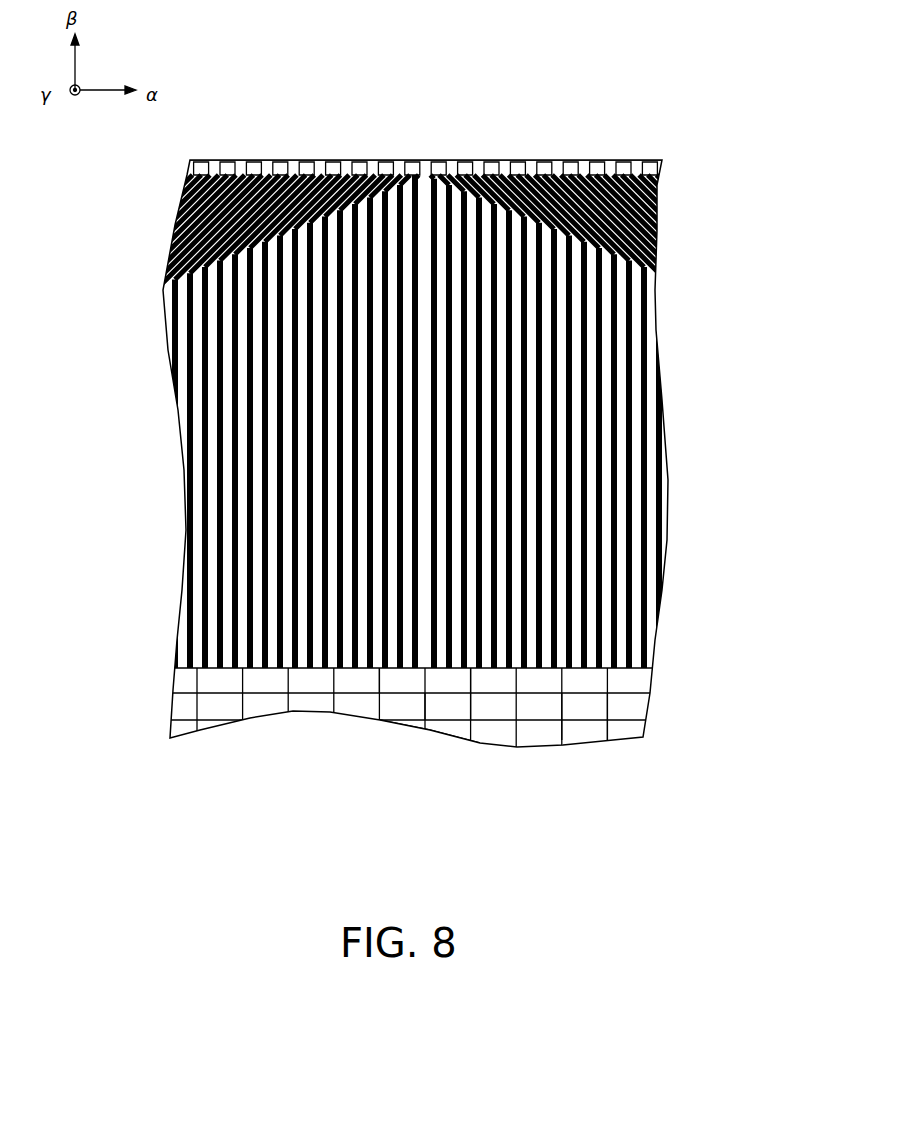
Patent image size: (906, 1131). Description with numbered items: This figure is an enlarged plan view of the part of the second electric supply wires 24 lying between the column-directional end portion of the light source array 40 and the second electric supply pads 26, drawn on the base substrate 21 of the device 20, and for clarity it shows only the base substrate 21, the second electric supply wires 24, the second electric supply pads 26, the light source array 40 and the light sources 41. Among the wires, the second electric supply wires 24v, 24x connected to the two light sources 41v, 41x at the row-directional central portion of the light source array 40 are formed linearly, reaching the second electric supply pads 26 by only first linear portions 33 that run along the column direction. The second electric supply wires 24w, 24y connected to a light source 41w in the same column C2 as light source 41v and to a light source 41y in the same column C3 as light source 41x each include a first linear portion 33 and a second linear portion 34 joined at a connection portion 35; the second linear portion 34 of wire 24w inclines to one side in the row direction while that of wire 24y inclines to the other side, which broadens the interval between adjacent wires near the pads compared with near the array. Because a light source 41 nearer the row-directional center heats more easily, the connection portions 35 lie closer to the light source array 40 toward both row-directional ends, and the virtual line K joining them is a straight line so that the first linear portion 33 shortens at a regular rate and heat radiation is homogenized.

The wiring board 20 is at (663, 160).
The base substrate 21 is at (633, 160).
The second electric supply wire 24 is at (424, 377).
The second electric supply pad 26 is at (417, 185).
The first linear portion 33 is at (395, 185).
The second linear portion 34 is at (182, 232).
The connection portion 35 is at (242, 162).
The virtual line K is at (612, 265).
The second electric supply wire 24v is at (423, 547).
The second electric supply wire 24w is at (423, 592).
The second electric supply wire 24x is at (440, 547).
The second electric supply wire 24y is at (453, 600).
The light source array 40 is at (658, 690).
The light source 41 is at (587, 732).
The light source 41v is at (383, 680).
The light source 41w is at (412, 713).
The light source 41x is at (473, 680).
The light source 41y is at (450, 717).
The column C2 is at (388, 737).
The column C3 is at (445, 748).